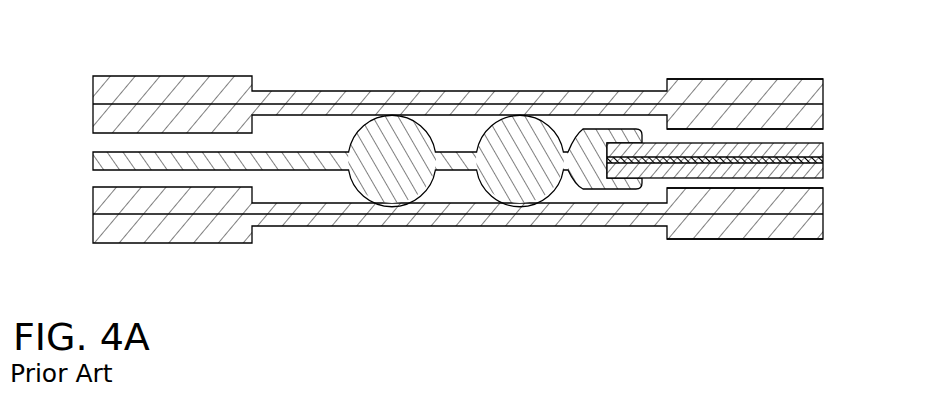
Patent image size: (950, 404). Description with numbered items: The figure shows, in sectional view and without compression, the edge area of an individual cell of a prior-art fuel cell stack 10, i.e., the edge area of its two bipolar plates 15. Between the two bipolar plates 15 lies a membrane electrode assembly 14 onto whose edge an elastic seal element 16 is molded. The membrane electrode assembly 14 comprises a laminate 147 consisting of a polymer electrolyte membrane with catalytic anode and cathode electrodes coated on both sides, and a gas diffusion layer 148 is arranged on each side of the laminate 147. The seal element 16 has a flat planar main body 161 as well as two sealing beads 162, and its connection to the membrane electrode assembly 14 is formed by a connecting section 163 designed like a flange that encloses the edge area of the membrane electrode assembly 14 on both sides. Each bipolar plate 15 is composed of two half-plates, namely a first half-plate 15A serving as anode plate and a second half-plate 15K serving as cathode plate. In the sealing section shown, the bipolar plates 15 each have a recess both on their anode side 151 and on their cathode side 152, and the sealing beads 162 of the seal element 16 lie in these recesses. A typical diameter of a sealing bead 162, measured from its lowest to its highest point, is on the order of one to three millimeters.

The fuel cell stack 10 is at (88, 60).
The membrane electrode assembly 14 is at (890, 107).
The bipolar plate 15 is at (87, 76).
The second half-plate 15K is at (145, 202).
The first half-plate 15A is at (228, 228).
The seal element 16 is at (106, 159).
The main body 161 is at (306, 160).
The sealing bead 162 is at (392, 137).
The connecting section 163 is at (593, 140).
The laminate 147 is at (814, 160).
The gas diffusion layer 148 is at (814, 150).
The anode side 151 is at (745, 160).
The cathode side 152 is at (745, 160).